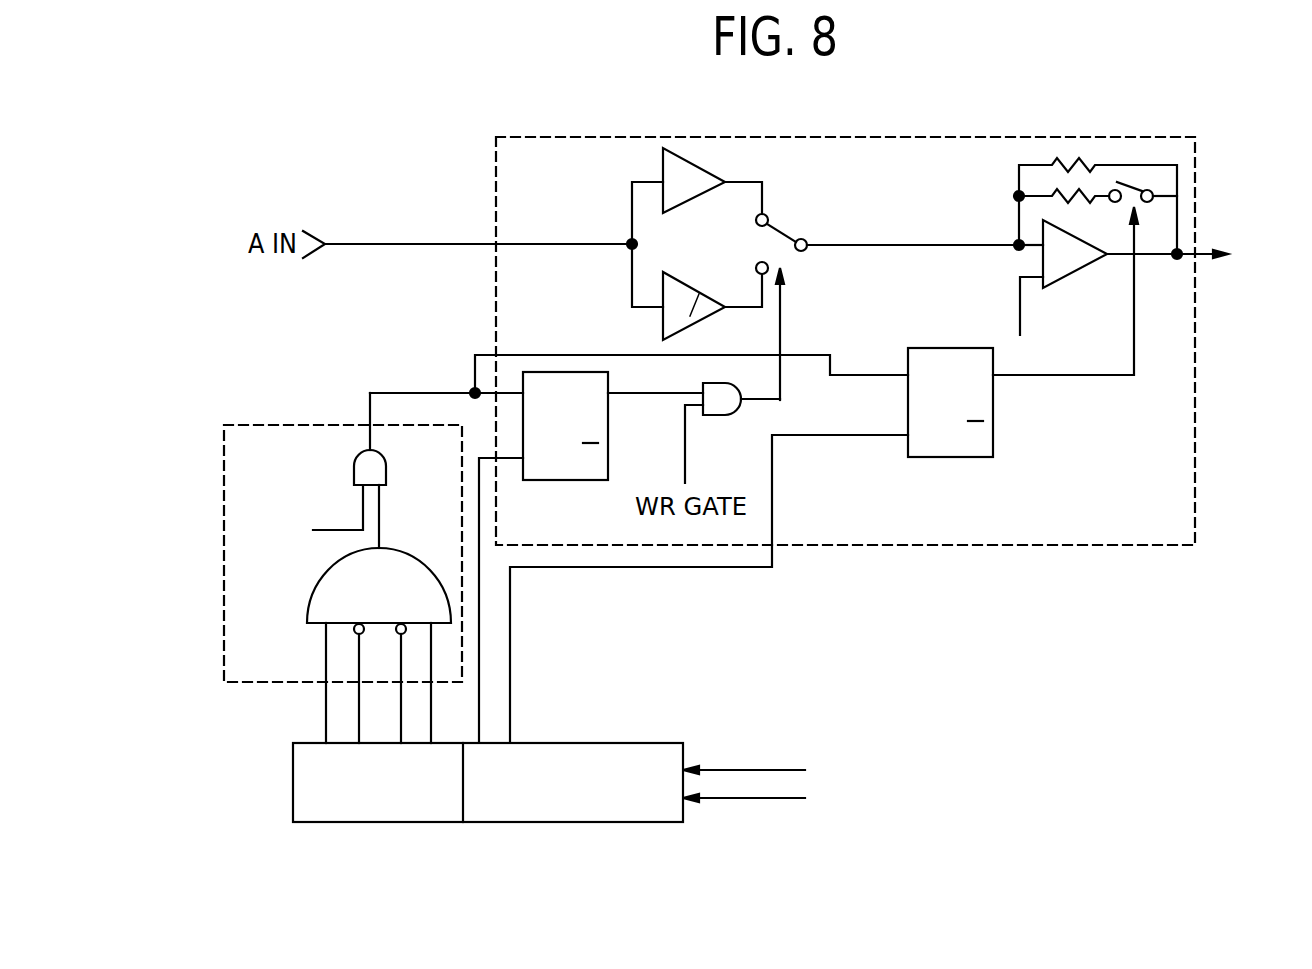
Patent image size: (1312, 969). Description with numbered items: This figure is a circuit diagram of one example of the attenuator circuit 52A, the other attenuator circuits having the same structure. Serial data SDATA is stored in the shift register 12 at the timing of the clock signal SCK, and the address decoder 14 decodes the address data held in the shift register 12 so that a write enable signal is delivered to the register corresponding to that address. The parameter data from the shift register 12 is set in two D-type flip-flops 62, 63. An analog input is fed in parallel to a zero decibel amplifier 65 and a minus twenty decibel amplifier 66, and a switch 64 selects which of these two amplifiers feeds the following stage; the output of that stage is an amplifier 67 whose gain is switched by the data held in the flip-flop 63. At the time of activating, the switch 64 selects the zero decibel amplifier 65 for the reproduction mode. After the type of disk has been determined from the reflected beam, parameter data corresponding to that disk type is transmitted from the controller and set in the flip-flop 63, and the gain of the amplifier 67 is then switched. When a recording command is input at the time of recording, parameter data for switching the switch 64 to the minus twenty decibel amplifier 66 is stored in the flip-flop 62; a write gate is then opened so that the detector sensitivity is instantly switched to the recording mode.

The attenuator circuit 52A is at (955, 134).
The 0 dB amplifier 65 is at (697, 163).
The -20 dB amplifier 66 is at (716, 265).
The switch 64 is at (778, 223).
The amplifier 67 is at (1073, 270).
The D-type flip-flop 62 is at (609, 426).
The D-type flip-flop 63 is at (994, 411).
The address decoder 14 is at (297, 423).
The shift register 12 is at (333, 823).